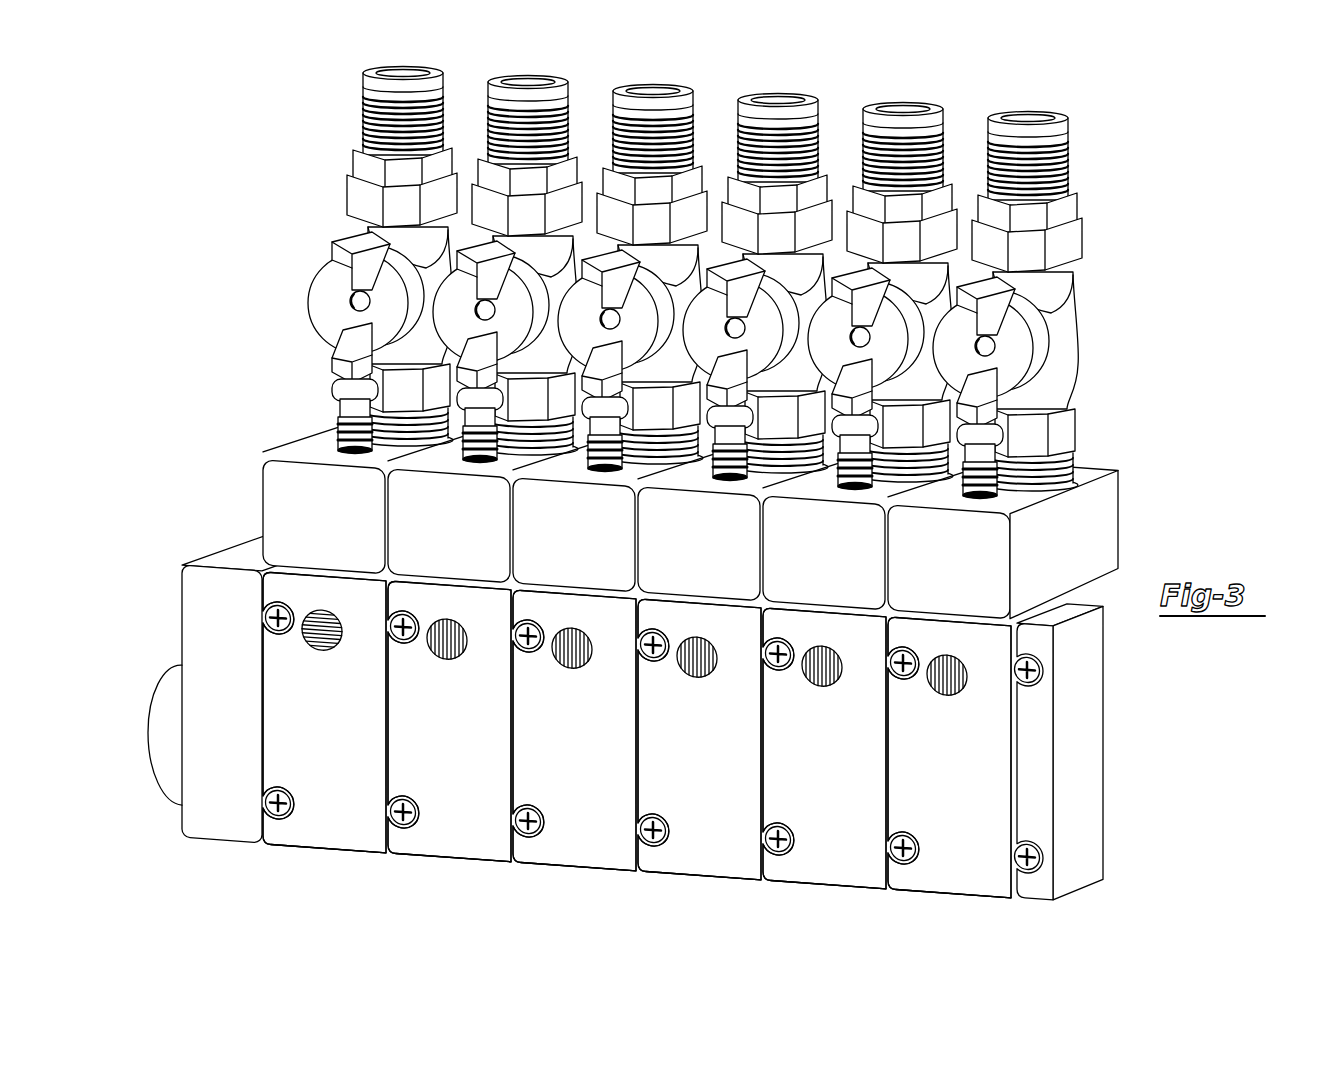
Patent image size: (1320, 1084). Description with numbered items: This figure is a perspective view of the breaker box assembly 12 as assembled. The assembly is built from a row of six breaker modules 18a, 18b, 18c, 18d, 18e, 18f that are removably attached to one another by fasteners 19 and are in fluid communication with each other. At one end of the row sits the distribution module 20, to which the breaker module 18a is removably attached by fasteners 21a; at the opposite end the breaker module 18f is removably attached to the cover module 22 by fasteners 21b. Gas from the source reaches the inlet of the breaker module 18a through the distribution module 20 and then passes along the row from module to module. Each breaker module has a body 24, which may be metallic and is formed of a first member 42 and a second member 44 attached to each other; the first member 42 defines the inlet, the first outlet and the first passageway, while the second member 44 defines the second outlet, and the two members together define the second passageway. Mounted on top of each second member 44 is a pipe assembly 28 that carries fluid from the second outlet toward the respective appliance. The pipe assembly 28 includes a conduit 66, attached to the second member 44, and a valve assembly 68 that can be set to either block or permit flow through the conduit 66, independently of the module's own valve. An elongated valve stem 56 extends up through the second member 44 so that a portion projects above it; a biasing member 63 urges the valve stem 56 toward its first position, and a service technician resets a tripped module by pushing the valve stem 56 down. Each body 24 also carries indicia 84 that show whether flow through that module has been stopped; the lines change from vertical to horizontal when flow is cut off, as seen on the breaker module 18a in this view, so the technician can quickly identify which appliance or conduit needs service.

The breaker box assembly 12 is at (679, 499).
The breaker module 18a is at (324, 753).
The breaker module 18b is at (449, 761).
The breaker module 18c is at (574, 770).
The breaker module 18d is at (699, 778).
The breaker module 18e is at (824, 781).
The breaker module 18f is at (949, 788).
The fasteners 19 is at (684, 704).
The distribution module 20 is at (197, 655).
The fasteners 21a is at (284, 606).
The fasteners 21b is at (1038, 680).
The cover module 22 is at (1085, 779).
The body 24 is at (638, 899).
The pipe assembly 28 is at (748, 265).
The first member 42 is at (278, 722).
The second member 44 is at (270, 488).
The valve stem 56 is at (623, 470).
The biasing member 63 is at (343, 423).
The conduit 66 is at (726, 174).
The valve assembly 68 is at (447, 309).
The indicia 84 is at (634, 693).